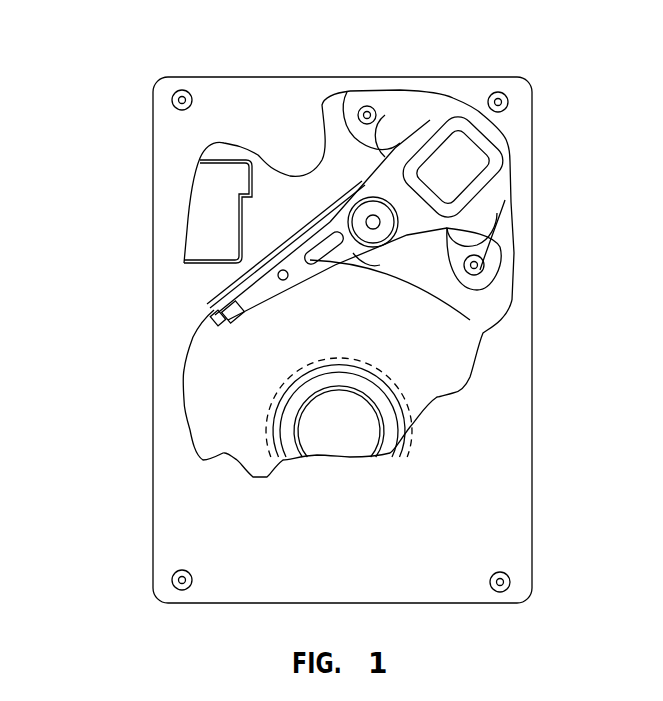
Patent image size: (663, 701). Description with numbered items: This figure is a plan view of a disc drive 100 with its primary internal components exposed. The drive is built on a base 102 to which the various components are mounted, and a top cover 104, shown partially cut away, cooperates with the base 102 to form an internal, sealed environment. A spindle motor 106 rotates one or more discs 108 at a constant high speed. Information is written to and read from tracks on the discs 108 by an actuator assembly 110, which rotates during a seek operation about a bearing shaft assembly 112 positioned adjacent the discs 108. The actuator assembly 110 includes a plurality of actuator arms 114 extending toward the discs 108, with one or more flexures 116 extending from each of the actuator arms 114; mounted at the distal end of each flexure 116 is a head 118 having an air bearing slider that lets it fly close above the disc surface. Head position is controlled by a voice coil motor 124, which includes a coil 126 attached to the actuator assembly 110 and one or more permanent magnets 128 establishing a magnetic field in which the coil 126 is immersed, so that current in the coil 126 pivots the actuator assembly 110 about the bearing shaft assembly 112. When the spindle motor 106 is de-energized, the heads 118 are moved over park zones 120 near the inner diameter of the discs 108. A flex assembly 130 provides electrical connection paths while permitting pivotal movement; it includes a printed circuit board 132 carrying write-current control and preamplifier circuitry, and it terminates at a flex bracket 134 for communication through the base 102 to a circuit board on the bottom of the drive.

The disc drive 100 is at (129, 71).
The base 102 is at (192, 272).
The top cover 104 is at (198, 520).
The spindle motor 106 is at (339, 433).
The discs 108 is at (440, 383).
The actuator assembly 110 is at (353, 260).
The bearing shaft assembly 112 is at (377, 225).
The actuator arms 114 is at (332, 270).
The flexures 116 is at (238, 307).
The head 118 is at (216, 326).
The park zones 120 is at (266, 433).
The voice coil motor 124 is at (412, 88).
The coil 126 is at (513, 168).
The permanent magnets 128 is at (393, 135).
The flex assembly 130 is at (322, 228).
The printed circuit board 132 is at (348, 183).
The flex bracket 134 is at (205, 200).